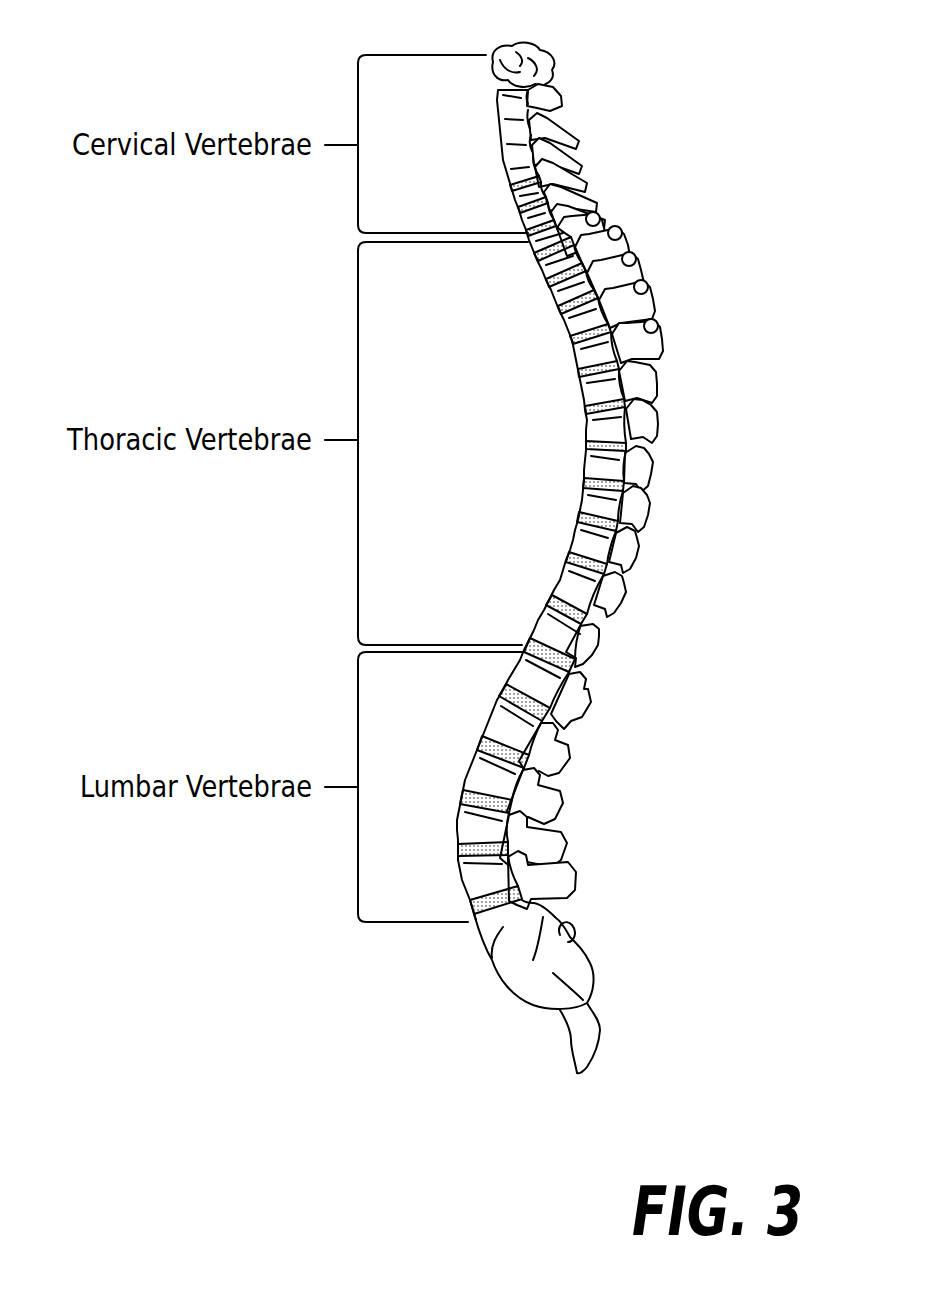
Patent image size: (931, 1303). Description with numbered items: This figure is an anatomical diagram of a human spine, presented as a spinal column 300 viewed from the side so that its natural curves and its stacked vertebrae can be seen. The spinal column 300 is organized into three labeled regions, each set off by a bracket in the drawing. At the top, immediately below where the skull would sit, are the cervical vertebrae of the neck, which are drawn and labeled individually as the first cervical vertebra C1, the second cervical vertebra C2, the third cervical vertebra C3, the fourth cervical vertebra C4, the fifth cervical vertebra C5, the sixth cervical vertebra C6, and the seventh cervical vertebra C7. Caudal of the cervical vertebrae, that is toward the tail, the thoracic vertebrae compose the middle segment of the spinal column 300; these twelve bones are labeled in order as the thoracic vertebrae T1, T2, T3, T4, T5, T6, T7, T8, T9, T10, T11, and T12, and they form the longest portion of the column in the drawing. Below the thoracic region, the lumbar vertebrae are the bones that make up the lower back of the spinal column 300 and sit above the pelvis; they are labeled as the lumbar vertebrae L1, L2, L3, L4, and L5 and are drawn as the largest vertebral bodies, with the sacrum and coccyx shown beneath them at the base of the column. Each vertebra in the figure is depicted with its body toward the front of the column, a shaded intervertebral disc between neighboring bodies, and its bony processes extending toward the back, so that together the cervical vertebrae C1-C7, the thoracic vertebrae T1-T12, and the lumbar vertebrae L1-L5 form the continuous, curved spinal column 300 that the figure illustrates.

The spinal column 300 is at (601, 121).
The cervical vertebra C1 is at (503, 65).
The cervical vertebra C2 is at (512, 96).
The cervical vertebra C3 is at (520, 127).
The cervical vertebra C4 is at (523, 152).
The cervical vertebra C5 is at (527, 174).
The cervical vertebra C6 is at (536, 198).
The cervical vertebra C7 is at (547, 221).
The thoracic vertebra T1 is at (553, 240).
The thoracic vertebra T2 is at (573, 260).
The thoracic vertebra T3 is at (589, 286).
The thoracic vertebra T4 is at (599, 317).
The thoracic vertebra T5 is at (605, 353).
The thoracic vertebra T6 is at (604, 388).
The thoracic vertebra T7 is at (605, 422).
The thoracic vertebra T8 is at (604, 469).
The thoracic vertebra T9 is at (601, 508).
The thoracic vertebra T10 is at (581, 548).
The thoracic vertebra T11 is at (569, 588).
The thoracic vertebra T12 is at (543, 632).
The lumbar vertebra L1 is at (533, 690).
The lumbar vertebra L2 is at (513, 736).
The lumbar vertebra L3 is at (499, 786).
The lumbar vertebra L4 is at (496, 839).
The lumbar vertebra L5 is at (504, 880).